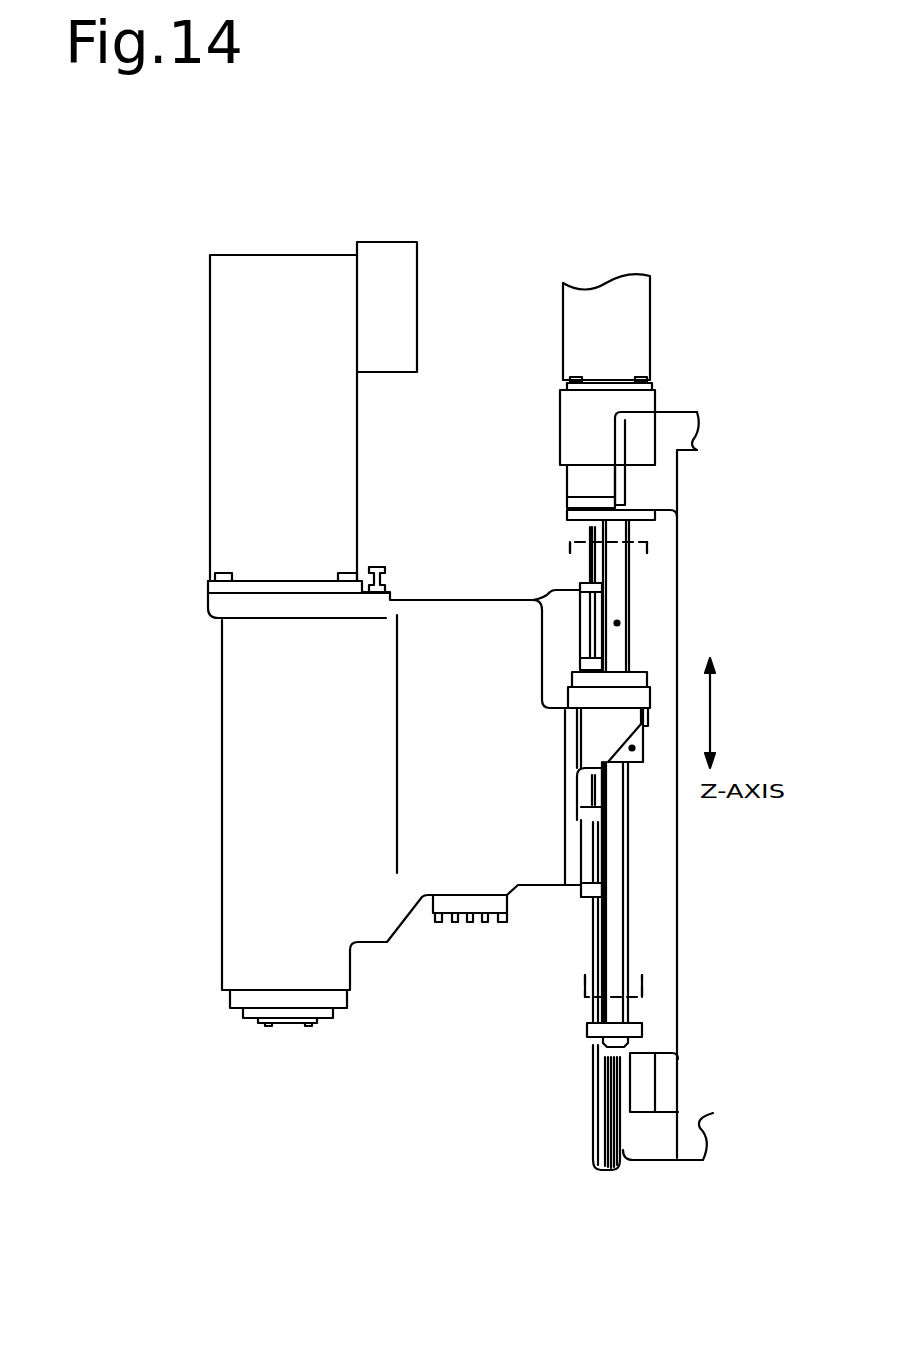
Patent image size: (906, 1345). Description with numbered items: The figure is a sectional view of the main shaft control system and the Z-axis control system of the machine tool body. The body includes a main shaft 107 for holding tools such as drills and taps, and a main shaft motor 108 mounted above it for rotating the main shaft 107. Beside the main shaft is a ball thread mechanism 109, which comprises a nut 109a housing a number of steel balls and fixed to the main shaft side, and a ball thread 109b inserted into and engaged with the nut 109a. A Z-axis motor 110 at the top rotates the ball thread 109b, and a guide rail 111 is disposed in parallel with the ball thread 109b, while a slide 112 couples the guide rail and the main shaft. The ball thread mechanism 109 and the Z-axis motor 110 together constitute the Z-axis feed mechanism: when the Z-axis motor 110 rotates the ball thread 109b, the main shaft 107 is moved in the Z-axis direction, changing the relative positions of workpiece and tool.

The main shaft 107 is at (287, 1021).
The main shaft motor 108 is at (357, 472).
The ball thread mechanism 109 is at (656, 659).
The nut 109a is at (644, 757).
The ball thread 109b is at (630, 583).
The Z-axis motor 110 is at (650, 330).
The guide rail 111 is at (593, 1113).
The slide 112 is at (583, 628).